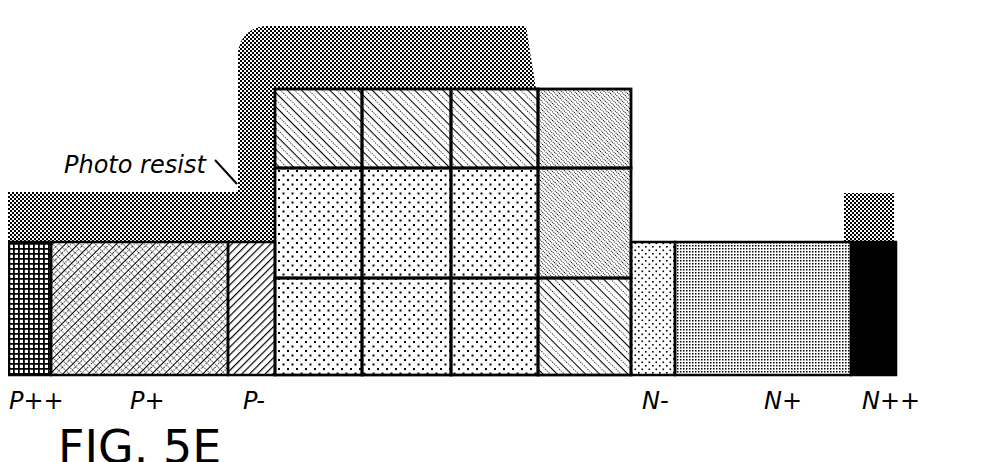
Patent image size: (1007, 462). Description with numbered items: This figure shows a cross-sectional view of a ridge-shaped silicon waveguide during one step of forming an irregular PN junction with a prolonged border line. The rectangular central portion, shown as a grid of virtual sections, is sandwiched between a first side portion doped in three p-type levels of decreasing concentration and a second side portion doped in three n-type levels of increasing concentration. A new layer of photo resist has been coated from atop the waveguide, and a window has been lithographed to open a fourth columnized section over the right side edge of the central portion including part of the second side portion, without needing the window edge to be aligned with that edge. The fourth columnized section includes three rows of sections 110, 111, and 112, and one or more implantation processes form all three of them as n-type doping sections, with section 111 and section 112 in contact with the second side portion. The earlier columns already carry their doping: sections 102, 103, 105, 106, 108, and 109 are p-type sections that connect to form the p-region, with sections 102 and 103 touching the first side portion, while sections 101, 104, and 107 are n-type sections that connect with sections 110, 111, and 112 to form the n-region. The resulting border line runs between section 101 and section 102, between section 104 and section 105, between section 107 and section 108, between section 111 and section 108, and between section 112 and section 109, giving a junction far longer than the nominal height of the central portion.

The n-type doping section 101 is at (318, 128).
The p-type doping section 102 is at (318, 223).
The p-type doping section 103 is at (318, 326).
The n-type doping section 104 is at (406, 128).
The p-type doping section 105 is at (406, 223).
The p-type doping section 106 is at (406, 326).
The n-type doping section 107 is at (494, 128).
The p-type doping section 108 is at (494, 223).
The p-type doping section 109 is at (494, 326).
The n-type doping section 110 is at (584, 128).
The n-type doping section 111 is at (584, 223).
The n-type doping section 112 is at (584, 326).